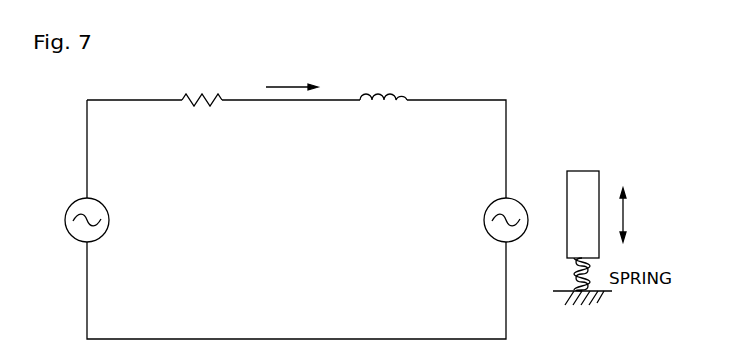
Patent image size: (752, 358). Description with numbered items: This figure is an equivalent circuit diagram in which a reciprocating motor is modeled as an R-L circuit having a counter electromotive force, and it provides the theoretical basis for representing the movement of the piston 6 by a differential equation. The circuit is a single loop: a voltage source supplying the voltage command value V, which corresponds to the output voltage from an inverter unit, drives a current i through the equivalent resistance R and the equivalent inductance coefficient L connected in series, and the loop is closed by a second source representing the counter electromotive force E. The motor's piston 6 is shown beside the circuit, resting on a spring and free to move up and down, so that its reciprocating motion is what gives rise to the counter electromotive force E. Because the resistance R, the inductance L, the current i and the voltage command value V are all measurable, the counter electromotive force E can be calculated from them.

The piston 6 is at (583, 171).
The equivalent resistance R is at (202, 88).
The equivalent inductance coefficient L is at (383, 85).
The current i is at (292, 77).
The voltage command value V is at (71, 220).
The counter electromotive force E is at (515, 220).